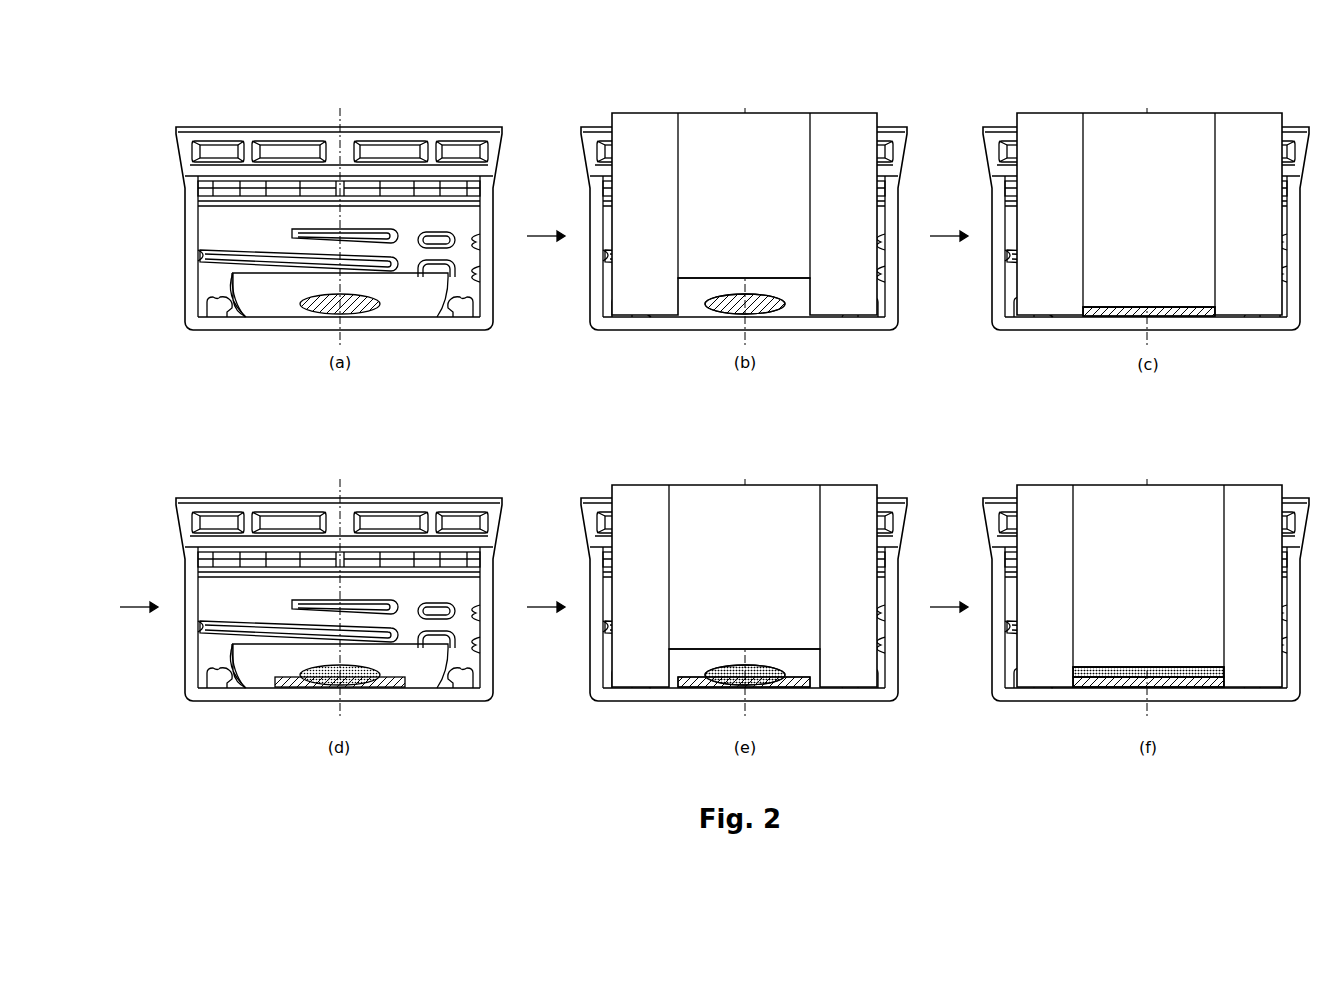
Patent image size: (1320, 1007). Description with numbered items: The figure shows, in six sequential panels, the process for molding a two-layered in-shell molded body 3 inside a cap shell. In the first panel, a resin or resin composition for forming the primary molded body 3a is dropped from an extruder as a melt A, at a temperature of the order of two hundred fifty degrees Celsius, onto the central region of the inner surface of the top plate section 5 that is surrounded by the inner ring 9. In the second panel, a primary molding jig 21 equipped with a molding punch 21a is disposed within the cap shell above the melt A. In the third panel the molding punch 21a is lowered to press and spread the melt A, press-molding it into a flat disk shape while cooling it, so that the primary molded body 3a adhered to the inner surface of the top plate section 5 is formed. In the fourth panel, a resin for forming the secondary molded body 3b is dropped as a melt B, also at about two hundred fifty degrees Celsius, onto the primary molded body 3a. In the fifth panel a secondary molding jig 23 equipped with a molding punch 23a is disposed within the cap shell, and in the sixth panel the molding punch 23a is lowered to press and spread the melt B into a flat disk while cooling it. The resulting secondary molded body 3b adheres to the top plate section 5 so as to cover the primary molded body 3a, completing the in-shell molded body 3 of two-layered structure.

The top plate section 5 is at (203, 333).
The inner ring 9 is at (247, 297).
The in-shell molded body 3 is at (1246, 743).
The primary molded body 3a is at (1180, 311).
The secondary molded body 3b is at (1222, 689).
The primary molding jig 21 is at (848, 130).
The molding punch 21a is at (715, 130).
The secondary molding jig 23 is at (848, 502).
The molding punch 23a is at (715, 502).
The melt A is at (378, 298).
The melt B is at (378, 668).